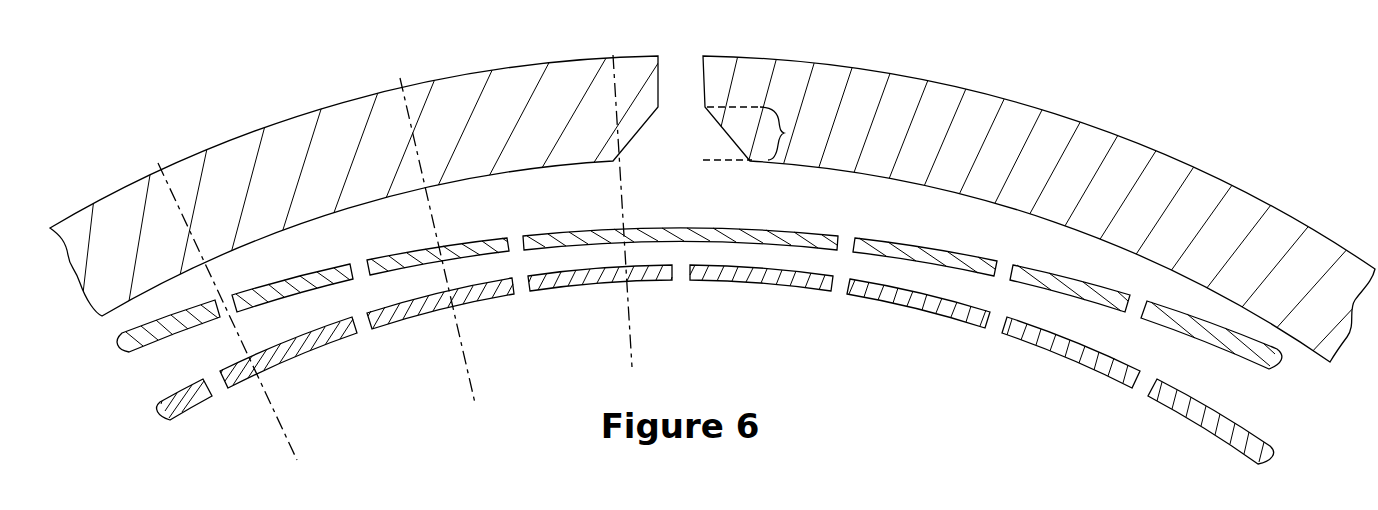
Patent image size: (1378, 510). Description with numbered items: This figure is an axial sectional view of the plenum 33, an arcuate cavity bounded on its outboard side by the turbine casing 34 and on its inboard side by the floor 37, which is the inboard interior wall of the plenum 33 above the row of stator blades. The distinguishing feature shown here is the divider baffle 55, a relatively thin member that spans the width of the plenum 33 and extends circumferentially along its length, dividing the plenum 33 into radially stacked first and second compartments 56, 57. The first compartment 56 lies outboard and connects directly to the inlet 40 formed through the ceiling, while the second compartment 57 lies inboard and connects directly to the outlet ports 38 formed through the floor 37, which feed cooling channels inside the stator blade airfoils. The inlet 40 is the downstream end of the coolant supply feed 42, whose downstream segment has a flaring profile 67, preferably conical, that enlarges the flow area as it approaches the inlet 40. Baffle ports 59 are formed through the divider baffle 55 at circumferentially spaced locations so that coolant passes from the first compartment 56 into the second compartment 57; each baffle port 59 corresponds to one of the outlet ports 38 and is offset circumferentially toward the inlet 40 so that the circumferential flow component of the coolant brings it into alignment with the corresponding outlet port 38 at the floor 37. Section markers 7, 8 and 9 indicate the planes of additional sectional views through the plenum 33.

The section line 7- 7 is at (613, 55).
The section line 8- 8 is at (400, 78).
The section line 9- 9 is at (158, 163).
The plenum 33 is at (699, 323).
The turbine casing 34 is at (454, 132).
The floor 37 is at (256, 370).
The outlet ports 38 is at (218, 385).
The inlet 40 is at (664, 170).
The coolant supply feed 42 is at (664, 87).
The divider baffle 55 is at (888, 252).
The first compartment 56 is at (463, 214).
The second compartment 57 is at (313, 315).
The baffle ports 59 is at (359, 270).
The flaring profile 67 is at (764, 133).